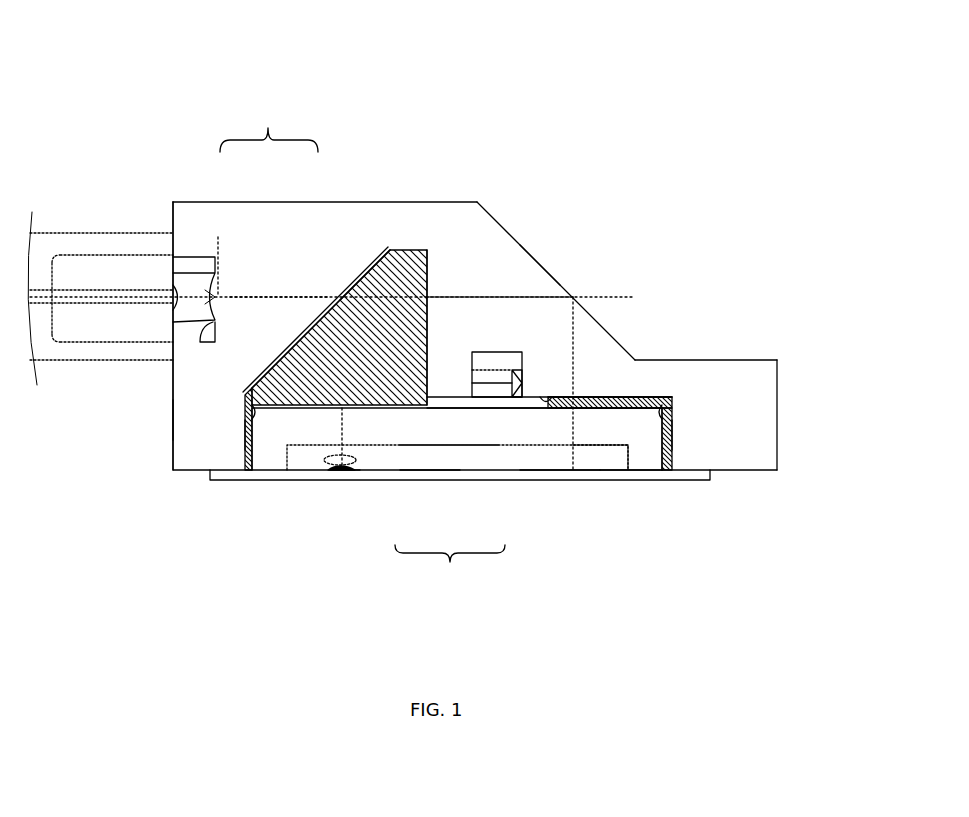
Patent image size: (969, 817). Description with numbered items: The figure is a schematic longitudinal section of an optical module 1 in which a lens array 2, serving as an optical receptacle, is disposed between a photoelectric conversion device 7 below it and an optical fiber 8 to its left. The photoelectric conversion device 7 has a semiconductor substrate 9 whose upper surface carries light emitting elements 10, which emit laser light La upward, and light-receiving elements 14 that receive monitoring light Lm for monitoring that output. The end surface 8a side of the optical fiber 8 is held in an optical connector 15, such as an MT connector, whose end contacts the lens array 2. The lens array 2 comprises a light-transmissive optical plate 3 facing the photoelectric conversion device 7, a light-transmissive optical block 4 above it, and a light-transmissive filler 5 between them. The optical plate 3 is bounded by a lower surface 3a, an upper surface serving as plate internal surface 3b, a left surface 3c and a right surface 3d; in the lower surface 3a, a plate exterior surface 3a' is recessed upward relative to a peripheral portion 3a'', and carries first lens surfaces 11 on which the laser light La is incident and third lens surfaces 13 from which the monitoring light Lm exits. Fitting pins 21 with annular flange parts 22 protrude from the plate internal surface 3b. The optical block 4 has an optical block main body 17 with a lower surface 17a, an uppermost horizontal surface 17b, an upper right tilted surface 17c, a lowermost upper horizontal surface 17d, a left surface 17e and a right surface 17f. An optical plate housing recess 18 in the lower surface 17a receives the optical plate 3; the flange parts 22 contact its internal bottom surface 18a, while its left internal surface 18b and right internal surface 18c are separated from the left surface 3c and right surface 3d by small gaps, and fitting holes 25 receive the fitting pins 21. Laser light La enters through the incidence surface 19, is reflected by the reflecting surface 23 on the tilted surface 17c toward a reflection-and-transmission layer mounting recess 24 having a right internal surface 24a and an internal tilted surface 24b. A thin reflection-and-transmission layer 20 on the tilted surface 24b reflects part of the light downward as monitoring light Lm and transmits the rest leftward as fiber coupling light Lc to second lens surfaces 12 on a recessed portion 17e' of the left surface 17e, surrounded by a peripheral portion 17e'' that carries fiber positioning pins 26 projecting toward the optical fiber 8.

The optical module 1 is at (93, 112).
The lens array 2 is at (262, 118).
The optical plate 3 is at (270, 390).
The optical block 4 is at (245, 202).
The filler 5 is at (362, 283).
The photoelectric conversion device 7 is at (444, 590).
The optical fiber 8 is at (120, 305).
The end surface 8a is at (177, 313).
The semiconductor substrate 9 is at (432, 472).
The light emitting element 10 is at (560, 463).
The first lens surface 11 is at (573, 452).
The second lens surface 12 is at (205, 295).
The third lens surface 13 is at (350, 452).
The light-receiving element 14 is at (367, 463).
The optical connector 15 is at (90, 363).
The optical block main body 17 is at (340, 202).
The lower surface 17a is at (697, 473).
The uppermost horizontal surface 17b is at (440, 202).
The upper right tilted surface 17c is at (538, 262).
The lowermost upper horizontal surface 17d is at (703, 360).
The left surface 17e is at (148, 433).
The recessed portion 17e' is at (197, 319).
The peripheral portion 17e'' is at (128, 423).
The right surface 17f is at (779, 442).
The optical plate housing recess 18 is at (252, 455).
The internal bottom surface 18a is at (546, 395).
The left internal surface 18b is at (244, 412).
The right internal surface 18c is at (673, 412).
The incidence surface 19 is at (583, 397).
The reflection-and-transmission layer 20 is at (332, 307).
The fitting pin 21 is at (497, 370).
The flange part 22 is at (462, 395).
The reflecting surface 23 is at (557, 282).
The reflection-and-transmission layer mounting recess 24 is at (392, 250).
The right internal surface 24a is at (412, 282).
The internal tilted surface 24b is at (388, 282).
The fitting hole 25 is at (517, 379).
The fiber positioning pin 26 is at (100, 348).
The lower surface 3a is at (457, 480).
The plate exterior surface 3a' is at (450, 480).
The peripheral portion 3a'' is at (639, 500).
The plate internal surface 3b is at (612, 397).
The left surface 3c is at (242, 436).
The right surface 3d is at (660, 420).
The laser light La is at (443, 297).
The fiber coupling light Lc is at (275, 297).
The monitoring light Lm is at (342, 423).